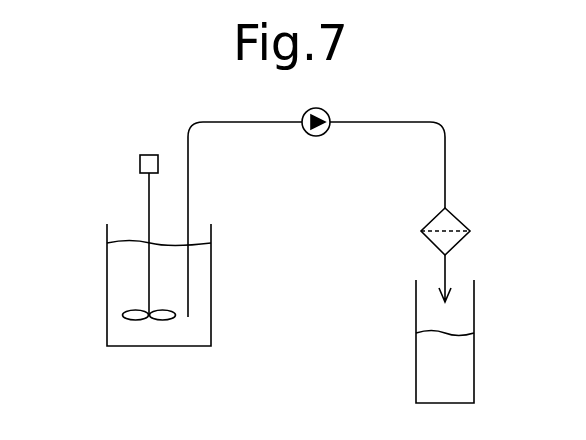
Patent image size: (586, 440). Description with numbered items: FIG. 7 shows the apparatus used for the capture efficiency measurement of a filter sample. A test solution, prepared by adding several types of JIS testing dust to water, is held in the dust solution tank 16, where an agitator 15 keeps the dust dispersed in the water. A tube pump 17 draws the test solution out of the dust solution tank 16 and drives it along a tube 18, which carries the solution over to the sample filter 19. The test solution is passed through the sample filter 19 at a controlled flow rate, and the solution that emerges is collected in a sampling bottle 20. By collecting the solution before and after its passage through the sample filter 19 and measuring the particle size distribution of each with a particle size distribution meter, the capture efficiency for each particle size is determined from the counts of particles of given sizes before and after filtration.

The agitator 15 is at (140, 163).
The dust solution tank 16 is at (106, 293).
The tube pump 17 is at (316, 136).
The tube 18 is at (446, 152).
The sample filter 19 is at (458, 218).
The sampling bottle 20 is at (476, 367).